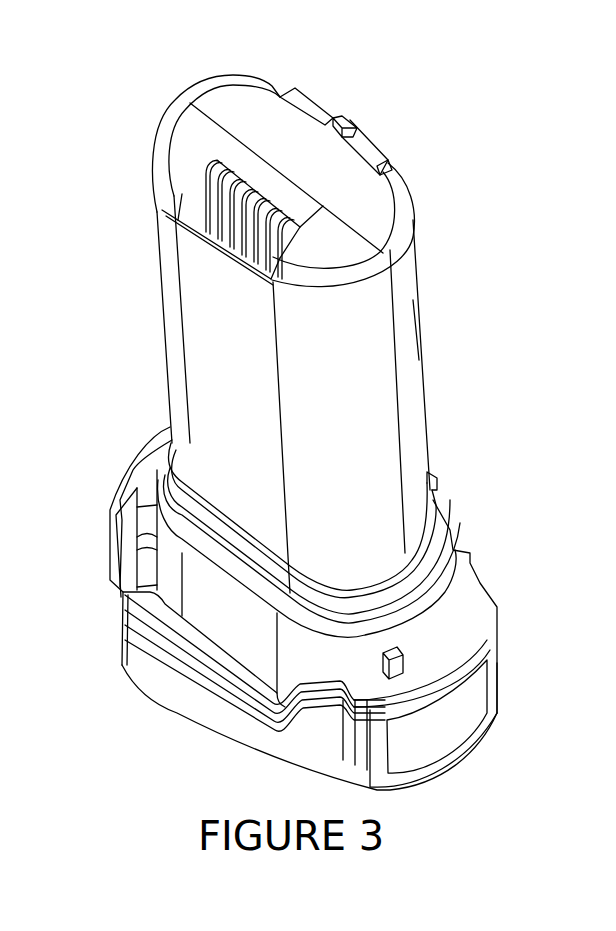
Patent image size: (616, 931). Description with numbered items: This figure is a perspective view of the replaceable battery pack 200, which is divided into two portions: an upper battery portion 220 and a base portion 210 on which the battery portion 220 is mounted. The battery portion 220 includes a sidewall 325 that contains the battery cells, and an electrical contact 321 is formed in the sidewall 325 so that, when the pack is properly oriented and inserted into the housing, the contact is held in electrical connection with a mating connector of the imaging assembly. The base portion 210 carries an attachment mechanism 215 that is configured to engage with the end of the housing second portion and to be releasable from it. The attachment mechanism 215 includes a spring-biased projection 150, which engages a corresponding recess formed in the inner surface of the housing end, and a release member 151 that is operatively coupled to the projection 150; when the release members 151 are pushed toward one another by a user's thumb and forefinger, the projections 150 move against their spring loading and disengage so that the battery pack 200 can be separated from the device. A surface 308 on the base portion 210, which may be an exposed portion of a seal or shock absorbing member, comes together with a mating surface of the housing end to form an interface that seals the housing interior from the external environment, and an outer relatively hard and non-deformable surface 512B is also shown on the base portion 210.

The battery pack 200 is at (315, 461).
The battery portion 220 is at (324, 334).
The base portion 210 is at (315, 636).
The electrical contact 321 is at (178, 210).
The sidewall 325 is at (407, 363).
The surface 308 is at (167, 447).
The outer relatively hard and non-deformable surface 512B is at (146, 468).
The projection 150 is at (430, 650).
The release member 151 is at (417, 748).
The attachment mechanism 215 is at (471, 774).